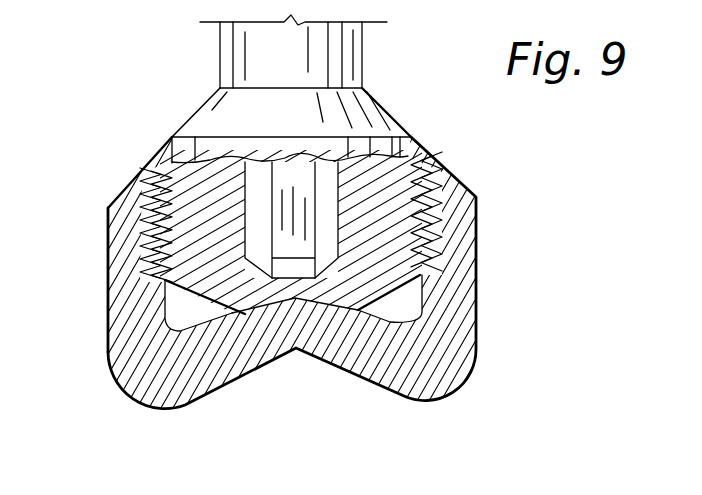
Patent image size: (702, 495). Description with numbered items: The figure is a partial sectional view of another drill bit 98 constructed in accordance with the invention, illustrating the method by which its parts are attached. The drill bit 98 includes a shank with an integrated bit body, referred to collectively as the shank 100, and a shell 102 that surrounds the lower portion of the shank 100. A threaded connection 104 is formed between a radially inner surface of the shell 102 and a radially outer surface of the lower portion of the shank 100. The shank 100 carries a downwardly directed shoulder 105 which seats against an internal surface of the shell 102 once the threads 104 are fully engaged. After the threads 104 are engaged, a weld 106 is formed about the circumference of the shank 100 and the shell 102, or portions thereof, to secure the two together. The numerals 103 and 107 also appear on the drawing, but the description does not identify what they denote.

The drill bit 98 is at (387, 89).
The shank 100 is at (218, 52).
The shell 102 is at (138, 406).
The internal thread 103 is at (160, 183).
The threaded connection 104 is at (165, 234).
The shoulder 105 is at (248, 310).
The weld 106 is at (168, 157).
The side wall 107 is at (125, 287).